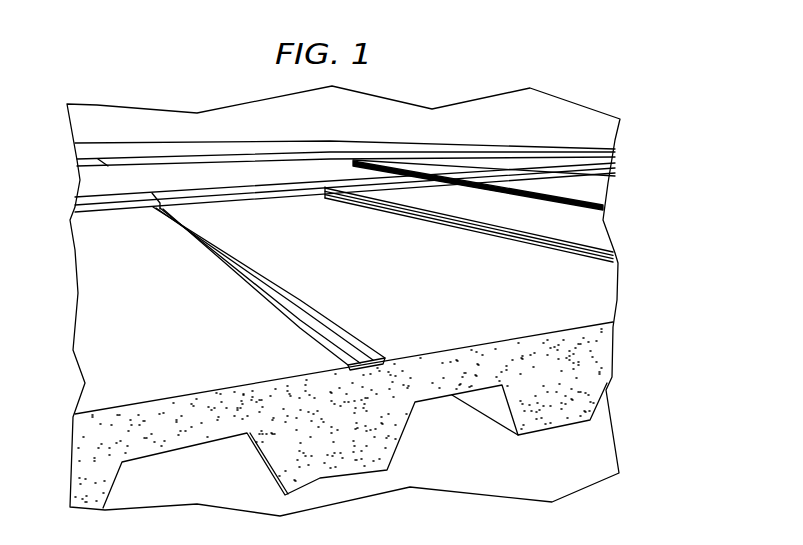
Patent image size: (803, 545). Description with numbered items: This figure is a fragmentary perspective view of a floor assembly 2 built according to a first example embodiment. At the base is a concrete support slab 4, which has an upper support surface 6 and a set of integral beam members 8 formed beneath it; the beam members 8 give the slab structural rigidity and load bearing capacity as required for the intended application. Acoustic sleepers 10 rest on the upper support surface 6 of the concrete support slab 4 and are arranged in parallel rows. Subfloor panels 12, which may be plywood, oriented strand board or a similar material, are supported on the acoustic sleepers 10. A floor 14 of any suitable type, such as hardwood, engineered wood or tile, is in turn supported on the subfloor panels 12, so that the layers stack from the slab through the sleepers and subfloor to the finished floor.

The floor assembly 2 is at (664, 184).
The concrete support slab 4 is at (642, 408).
The upper support surface 6 is at (598, 318).
The integral beam members 8 is at (113, 469).
The acoustic sleepers 10 is at (612, 163).
The subfloor panels 12 is at (535, 163).
The floor 14 is at (397, 145).